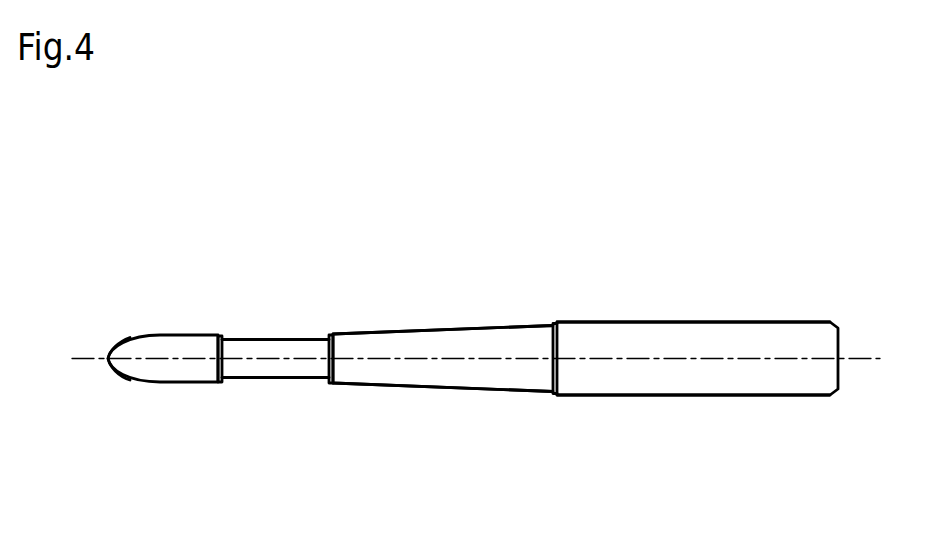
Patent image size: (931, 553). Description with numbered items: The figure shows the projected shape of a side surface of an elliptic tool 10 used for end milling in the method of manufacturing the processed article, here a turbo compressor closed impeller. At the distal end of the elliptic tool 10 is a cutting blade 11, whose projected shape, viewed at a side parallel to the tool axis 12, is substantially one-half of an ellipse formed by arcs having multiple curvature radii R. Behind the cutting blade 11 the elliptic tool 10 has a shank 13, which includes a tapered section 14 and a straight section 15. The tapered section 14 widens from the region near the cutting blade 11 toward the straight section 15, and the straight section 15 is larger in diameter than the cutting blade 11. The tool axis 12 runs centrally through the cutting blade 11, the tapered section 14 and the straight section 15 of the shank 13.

The elliptic tool 10 is at (515, 315).
The cutting blade 11 is at (177, 335).
The tool axis 12 is at (87, 358).
The shank 13 is at (500, 455).
The tapered section 14 is at (513, 394).
The straight section 15 is at (592, 396).
The curvature radius R is at (135, 368).